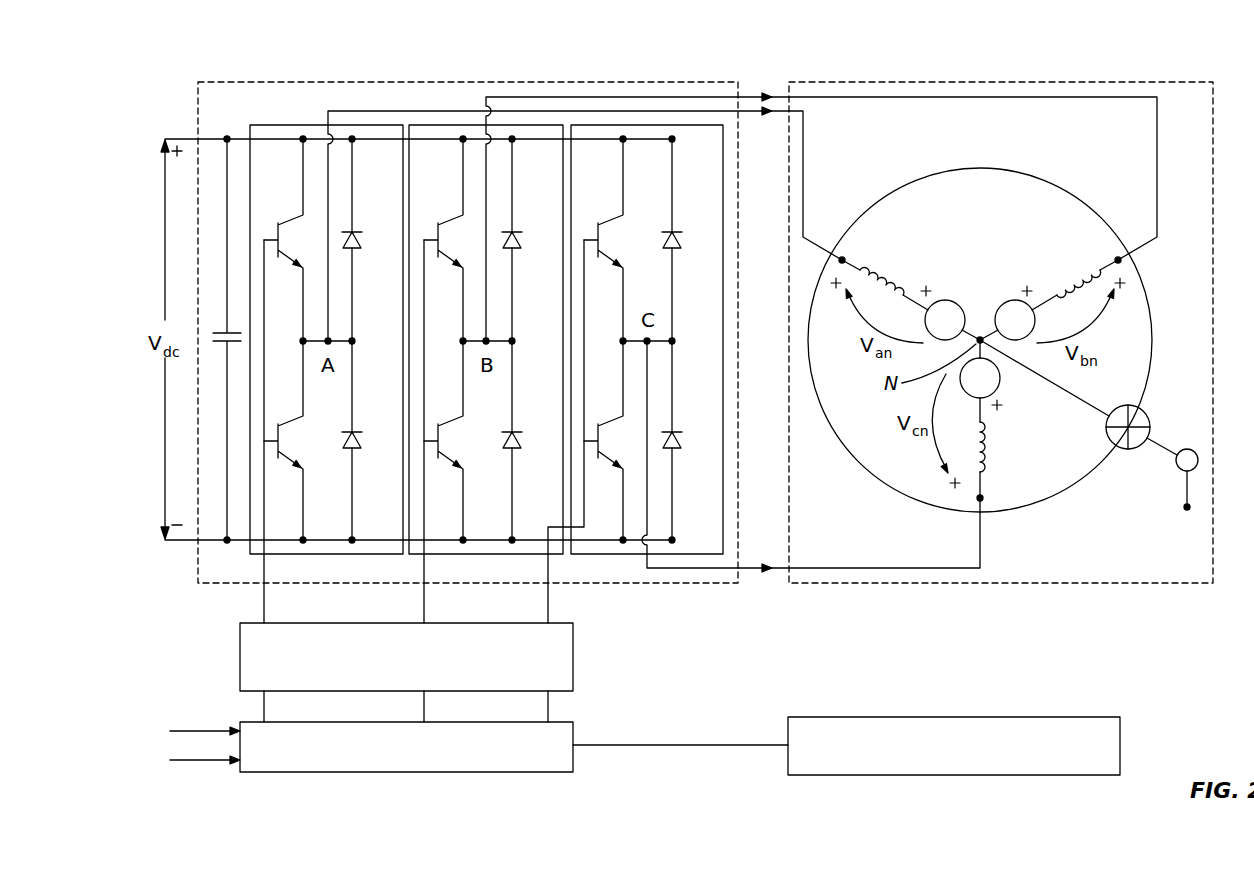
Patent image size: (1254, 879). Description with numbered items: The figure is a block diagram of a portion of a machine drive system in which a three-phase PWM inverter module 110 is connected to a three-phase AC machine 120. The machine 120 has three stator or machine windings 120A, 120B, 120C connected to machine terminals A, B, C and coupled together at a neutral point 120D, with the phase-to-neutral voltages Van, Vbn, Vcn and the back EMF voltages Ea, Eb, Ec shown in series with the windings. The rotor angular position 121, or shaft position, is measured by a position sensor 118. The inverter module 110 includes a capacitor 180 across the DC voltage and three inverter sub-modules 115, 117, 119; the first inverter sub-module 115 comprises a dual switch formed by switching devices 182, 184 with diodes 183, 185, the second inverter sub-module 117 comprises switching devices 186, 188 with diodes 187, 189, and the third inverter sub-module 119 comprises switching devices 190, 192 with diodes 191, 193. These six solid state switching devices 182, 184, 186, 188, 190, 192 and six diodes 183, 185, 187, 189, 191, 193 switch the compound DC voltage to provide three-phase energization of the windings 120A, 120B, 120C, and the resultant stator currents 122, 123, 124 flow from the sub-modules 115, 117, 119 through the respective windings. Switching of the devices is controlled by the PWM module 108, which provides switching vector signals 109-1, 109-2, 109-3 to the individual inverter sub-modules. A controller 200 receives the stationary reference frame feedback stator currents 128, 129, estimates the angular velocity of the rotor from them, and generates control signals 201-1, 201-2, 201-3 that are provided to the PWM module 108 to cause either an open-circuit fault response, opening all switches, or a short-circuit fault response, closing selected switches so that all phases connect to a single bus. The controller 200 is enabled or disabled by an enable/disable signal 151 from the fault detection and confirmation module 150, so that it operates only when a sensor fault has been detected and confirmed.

The three-phase PWM inverter module 110 is at (258, 82).
The three-phase AC machine 120 is at (848, 82).
The phase A stator current 122 is at (806, 160).
The phase B stator current 123 is at (1017, 95).
The phase C stator current 124 is at (748, 580).
The machine winding A 120A is at (897, 280).
The machine winding B 120B is at (1075, 280).
The machine winding C 120C is at (985, 453).
The neutral point 120D is at (980, 338).
The first inverter sub-module 115 is at (312, 556).
The second inverter sub-module 117 is at (487, 556).
The third inverter sub-module 119 is at (626, 556).
The position sensor 118 is at (1178, 468).
The angular position of the rotor 121 is at (1184, 498).
The capacitor 180 is at (227, 172).
The solid state controllable switching device 182 is at (263, 244).
The solid state controllable switching device 184 is at (263, 447).
The solid state controllable switching device 186 is at (424, 247).
The solid state controllable switching device 188 is at (424, 447).
The solid state controllable switching device 190 is at (584, 247).
The solid state controllable switching device 192 is at (584, 447).
The diode 183 is at (356, 232).
The diode 185 is at (356, 432).
The diode 187 is at (516, 232).
The diode 189 is at (516, 432).
The diode 191 is at (676, 232).
The diode 193 is at (676, 432).
The Pulse Width Modulation (PWM) module 108 is at (240, 645).
The switching vector signal 109-1 is at (264, 618).
The switching vector signal 109-2 is at (424, 618).
The switching vector signal 109-3 is at (549, 608).
The controller 200 is at (410, 772).
The control signal 201-1 is at (264, 703).
The control signal 201-2 is at (424, 718).
The control signal 201-3 is at (548, 718).
The stationary reference frame feedback stator current 128 is at (222, 728).
The stationary reference frame feedback stator current 129 is at (222, 762).
The enable/disable signal 151 is at (675, 745).
The fault detection and confirmation module 150 is at (1070, 717).